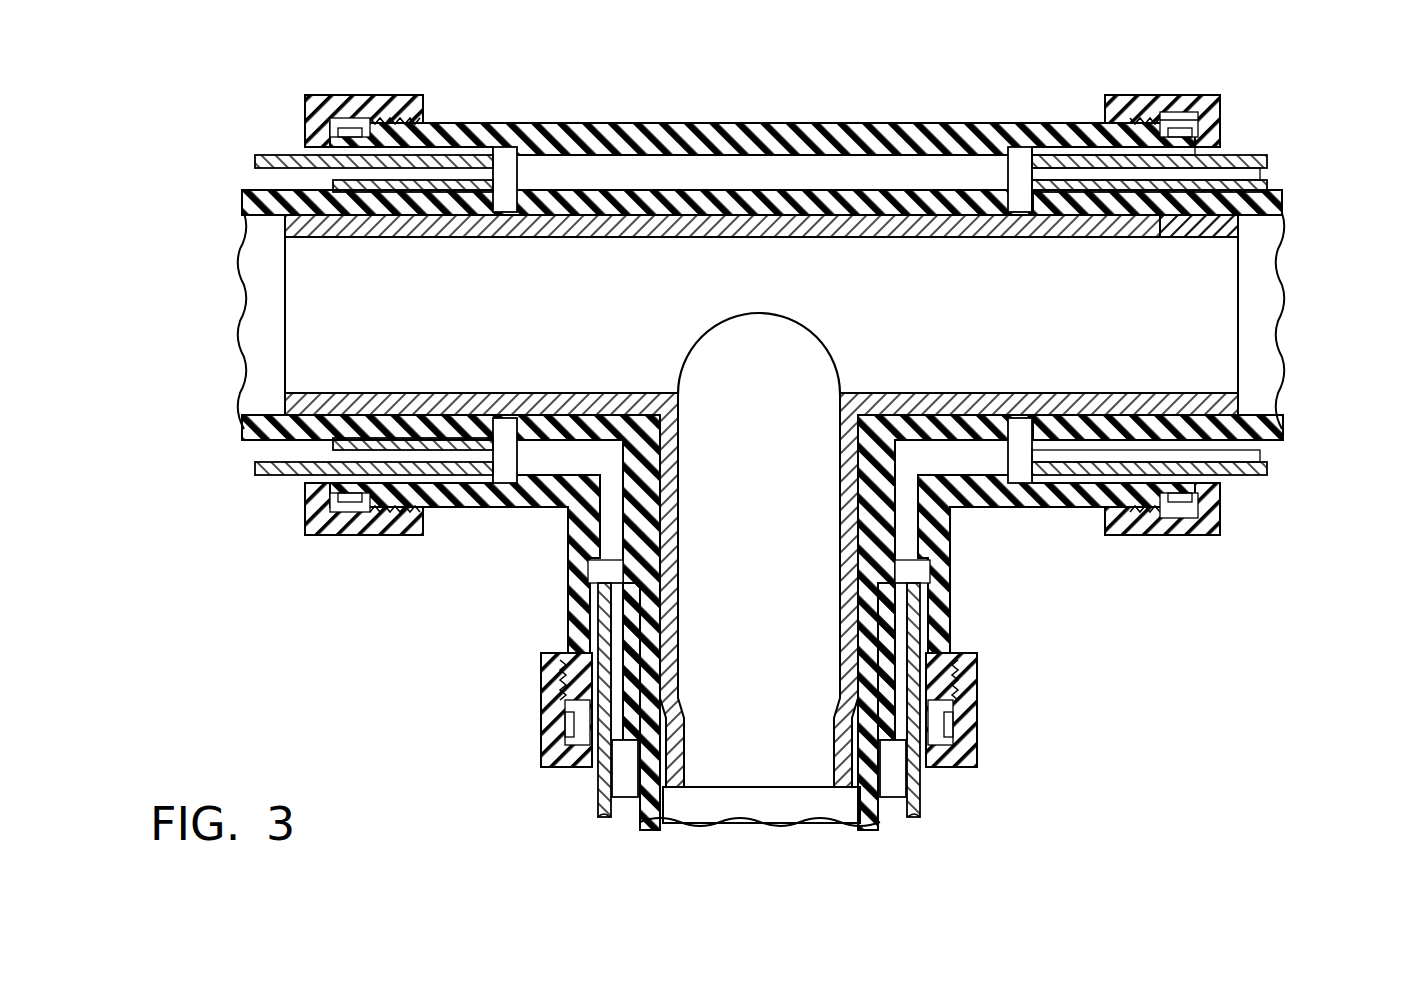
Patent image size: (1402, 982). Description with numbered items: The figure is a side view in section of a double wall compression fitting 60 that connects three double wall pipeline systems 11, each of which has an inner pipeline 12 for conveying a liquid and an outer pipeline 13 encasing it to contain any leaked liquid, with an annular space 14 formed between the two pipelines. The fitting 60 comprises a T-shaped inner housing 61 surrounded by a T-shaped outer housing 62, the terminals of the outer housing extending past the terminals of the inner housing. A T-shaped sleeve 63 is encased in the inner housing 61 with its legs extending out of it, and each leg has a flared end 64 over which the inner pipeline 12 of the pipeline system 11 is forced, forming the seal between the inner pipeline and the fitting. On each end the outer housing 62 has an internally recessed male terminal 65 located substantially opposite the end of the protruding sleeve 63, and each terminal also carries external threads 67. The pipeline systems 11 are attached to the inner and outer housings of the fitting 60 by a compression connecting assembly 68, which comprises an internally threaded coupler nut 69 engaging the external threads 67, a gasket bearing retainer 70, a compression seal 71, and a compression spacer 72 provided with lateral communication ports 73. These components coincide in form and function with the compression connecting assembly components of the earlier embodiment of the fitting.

The double wall pipeline system 11 is at (258, 300).
The inner pipeline 12 is at (1247, 423).
The outer pipeline 13 is at (1247, 468).
The annular space 14 is at (1237, 448).
The fitting 60 is at (542, 540).
The T-shaped inner housing 61 is at (650, 200).
The T-shaped outer housing 62 is at (645, 130).
The T-shaped sleeve 63 is at (805, 228).
The flared end 64 is at (1195, 220).
The internally recessed male terminal 65 is at (1040, 130).
The external threads 67 is at (1148, 108).
The compression connecting assembly 68 is at (1194, 82).
The internally threaded coupler nut 69 is at (1200, 108).
The gasket bearing retainer 70 is at (1215, 137).
The compression seal 71 is at (1160, 120).
The compression spacer 72 is at (1140, 200).
The lateral communication ports 73 is at (1185, 172).